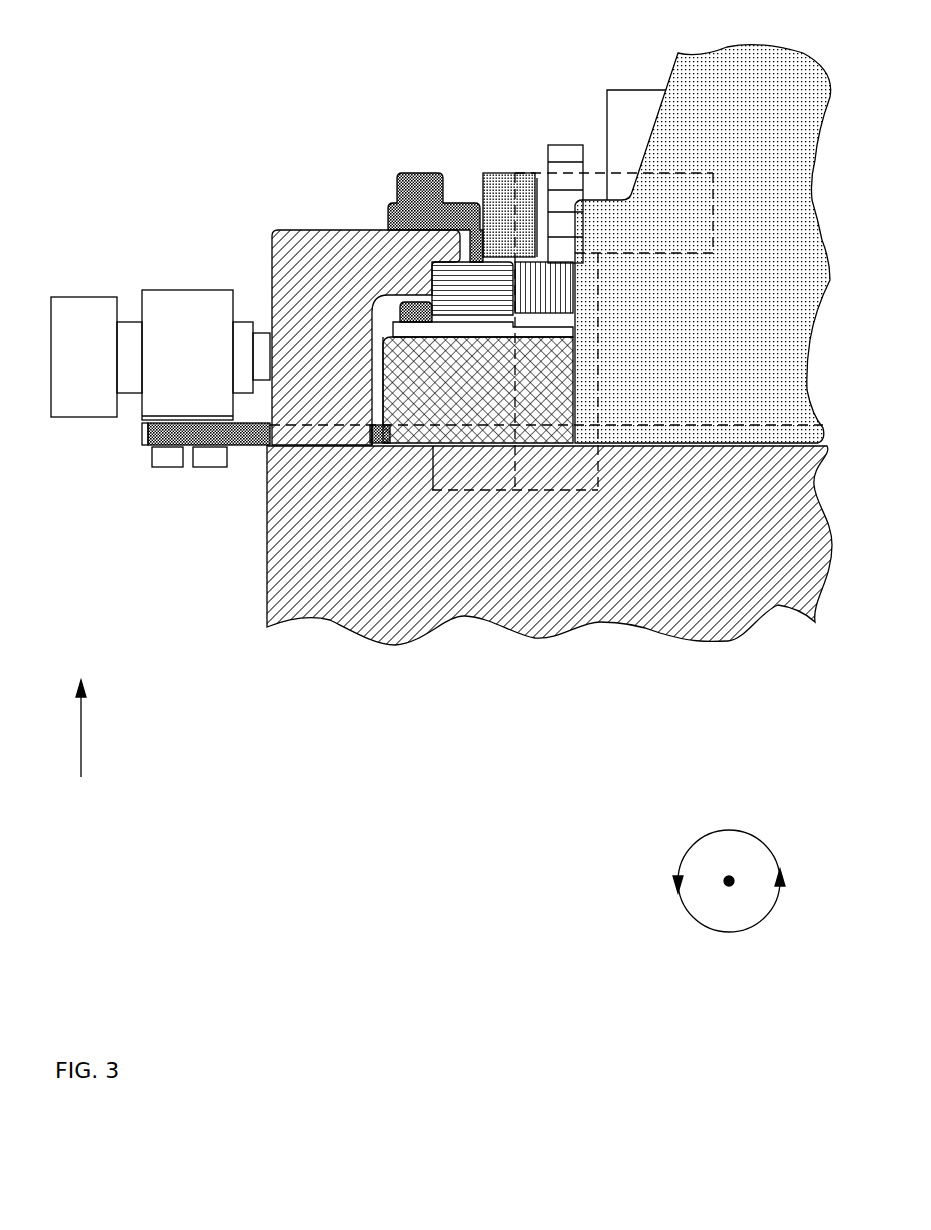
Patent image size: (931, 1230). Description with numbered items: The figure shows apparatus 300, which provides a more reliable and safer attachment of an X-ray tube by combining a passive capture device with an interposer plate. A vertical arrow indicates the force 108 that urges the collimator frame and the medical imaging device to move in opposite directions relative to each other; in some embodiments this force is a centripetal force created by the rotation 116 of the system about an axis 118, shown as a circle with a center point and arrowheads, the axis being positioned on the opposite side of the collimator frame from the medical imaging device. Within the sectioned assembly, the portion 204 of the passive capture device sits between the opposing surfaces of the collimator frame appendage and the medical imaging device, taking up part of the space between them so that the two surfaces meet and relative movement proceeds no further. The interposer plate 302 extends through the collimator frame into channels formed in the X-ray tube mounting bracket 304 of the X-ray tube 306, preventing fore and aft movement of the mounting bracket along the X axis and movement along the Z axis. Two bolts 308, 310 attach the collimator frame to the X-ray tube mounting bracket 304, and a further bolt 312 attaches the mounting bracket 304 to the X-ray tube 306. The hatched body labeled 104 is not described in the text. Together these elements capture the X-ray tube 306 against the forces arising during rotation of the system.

The housing 104 is at (272, 258).
The force 108 is at (81, 738).
The rotation 116 is at (688, 912).
The axis 118 is at (729, 878).
The portion 204 is at (398, 303).
The apparatus 300 is at (772, 1022).
The interposer plate 302 is at (253, 447).
The X-ray tube mounting bracket 304 is at (408, 447).
The X-ray tube 306 is at (680, 75).
The bolt 308 is at (440, 298).
The bolt 310 is at (566, 278).
The bolt 312 is at (510, 177).